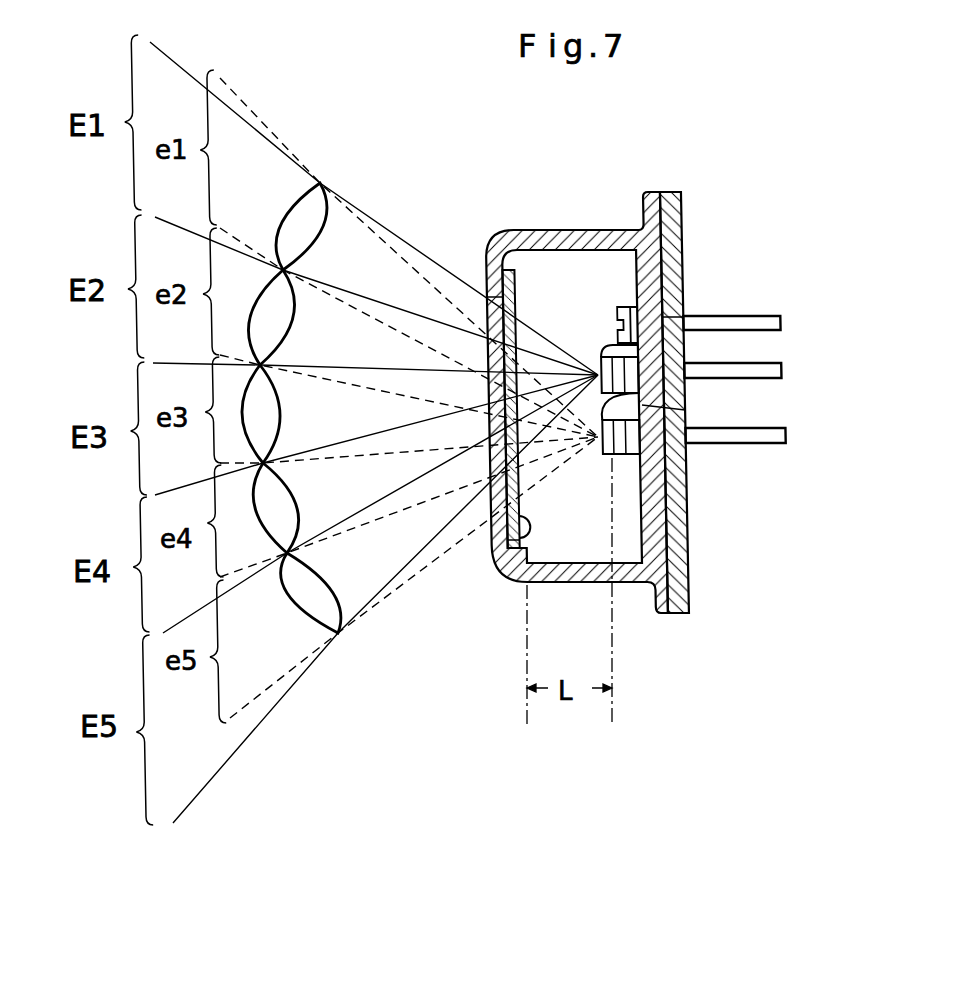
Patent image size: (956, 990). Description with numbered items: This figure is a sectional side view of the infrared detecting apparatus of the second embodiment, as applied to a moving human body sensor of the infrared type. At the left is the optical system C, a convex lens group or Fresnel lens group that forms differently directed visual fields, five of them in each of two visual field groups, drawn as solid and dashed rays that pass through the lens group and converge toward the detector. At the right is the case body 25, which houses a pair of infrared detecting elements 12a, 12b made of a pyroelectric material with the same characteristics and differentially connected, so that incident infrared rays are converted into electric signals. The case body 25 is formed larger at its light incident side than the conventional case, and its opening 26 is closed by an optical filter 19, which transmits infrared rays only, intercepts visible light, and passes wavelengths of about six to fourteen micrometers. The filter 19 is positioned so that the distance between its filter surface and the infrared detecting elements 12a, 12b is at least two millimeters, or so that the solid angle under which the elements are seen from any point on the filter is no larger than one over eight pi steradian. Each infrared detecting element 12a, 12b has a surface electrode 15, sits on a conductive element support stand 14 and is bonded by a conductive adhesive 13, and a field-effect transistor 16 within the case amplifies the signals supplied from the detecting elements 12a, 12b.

The infrared detecting element 12a is at (620, 362).
The infrared detecting element 12b is at (628, 452).
The conductive adhesive 13 is at (683, 396).
The conductive element support stand 14 is at (683, 317).
The surface electrode 15 is at (598, 352).
The field-effect transistor 16 is at (623, 310).
The optical filter 19 is at (498, 572).
The case body 25 is at (593, 229).
The opening 26 is at (490, 297).
The optical system C is at (308, 213).